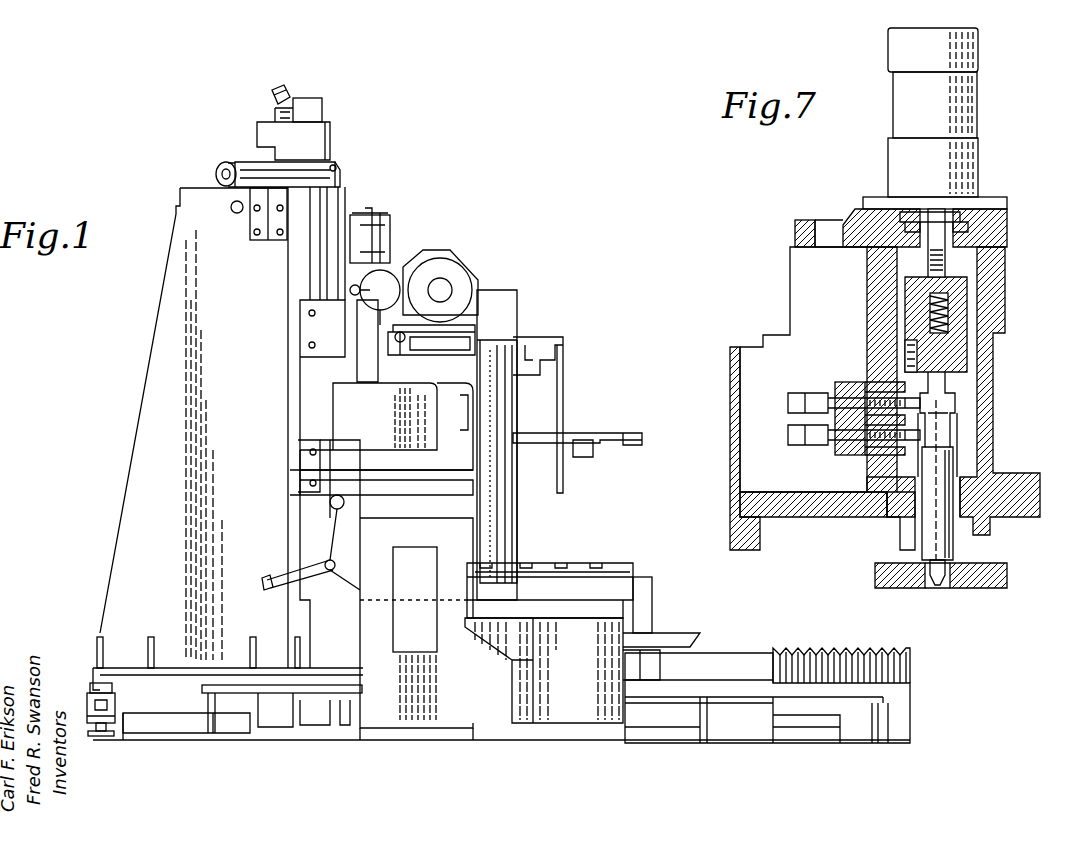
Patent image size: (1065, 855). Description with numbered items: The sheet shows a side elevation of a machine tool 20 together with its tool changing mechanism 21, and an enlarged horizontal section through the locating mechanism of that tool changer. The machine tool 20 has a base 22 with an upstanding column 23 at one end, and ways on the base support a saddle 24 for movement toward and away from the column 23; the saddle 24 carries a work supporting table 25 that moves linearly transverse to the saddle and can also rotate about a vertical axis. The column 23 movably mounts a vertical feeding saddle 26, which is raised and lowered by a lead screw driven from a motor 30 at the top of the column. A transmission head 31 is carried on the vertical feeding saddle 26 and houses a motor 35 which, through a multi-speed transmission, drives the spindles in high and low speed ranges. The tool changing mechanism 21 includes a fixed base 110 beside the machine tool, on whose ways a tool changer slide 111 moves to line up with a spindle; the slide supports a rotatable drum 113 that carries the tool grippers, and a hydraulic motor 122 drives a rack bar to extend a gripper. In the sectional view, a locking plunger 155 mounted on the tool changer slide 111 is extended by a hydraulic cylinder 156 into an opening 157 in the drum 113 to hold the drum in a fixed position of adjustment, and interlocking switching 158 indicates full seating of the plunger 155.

In FIG. 1, the machine tool 20 is at (637, 540).
In FIG. 1, the tool changing mechanism 21 is at (546, 520).
In FIG. 1, the base 22 is at (897, 718).
In FIG. 1, the column 23 is at (138, 527).
In FIG. 1, the saddle 24 is at (658, 642).
In FIG. 1, the work supporting table 25 is at (627, 590).
In FIG. 1, the vertical feeding saddle 26 is at (300, 400).
In FIG. 1, the motor 30 is at (317, 138).
In FIG. 1, the transmission head 31 is at (472, 315).
In FIG. 1, the motor 35 is at (452, 268).
In FIG. 1, the fixed base 110 is at (468, 728).
In FIG. 1, the tool changer slide 111 is at (403, 402).
In FIG. 7, the tool changer slide 111 is at (995, 388).
In FIG. 1, the drum 113 is at (512, 410).
In FIG. 7, the drum 113 is at (985, 585).
In FIG. 1, the hydraulic motor 122 is at (580, 455).
In FIG. 7, the plunger 155 is at (930, 548).
In FIG. 7, the hydraulic cylinder 156 is at (968, 163).
In FIG. 7, the opening 157 is at (932, 587).
In FIG. 7, the interlocking switching 158 is at (832, 370).